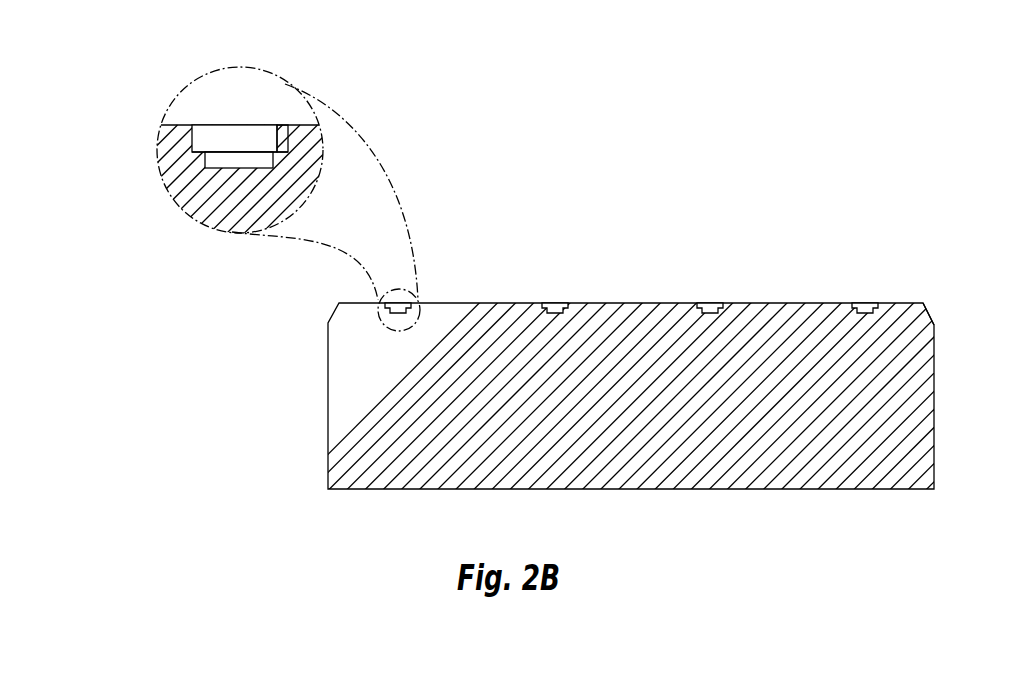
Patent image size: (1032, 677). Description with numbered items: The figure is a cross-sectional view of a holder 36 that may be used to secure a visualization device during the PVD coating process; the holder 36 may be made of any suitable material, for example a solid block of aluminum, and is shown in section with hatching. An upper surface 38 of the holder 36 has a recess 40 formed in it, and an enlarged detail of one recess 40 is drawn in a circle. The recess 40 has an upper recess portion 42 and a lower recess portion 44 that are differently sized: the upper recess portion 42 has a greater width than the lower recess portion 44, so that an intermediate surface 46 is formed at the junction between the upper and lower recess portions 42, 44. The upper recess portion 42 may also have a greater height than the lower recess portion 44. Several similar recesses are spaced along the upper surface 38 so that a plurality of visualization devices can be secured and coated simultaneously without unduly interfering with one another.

The holder 36 is at (655, 254).
The upper surface 38 is at (893, 303).
The recess 40 is at (234, 125).
The upper recess portion 42 is at (200, 140).
The lower recess portion 44 is at (213, 160).
The intermediate surface 46 is at (285, 151).